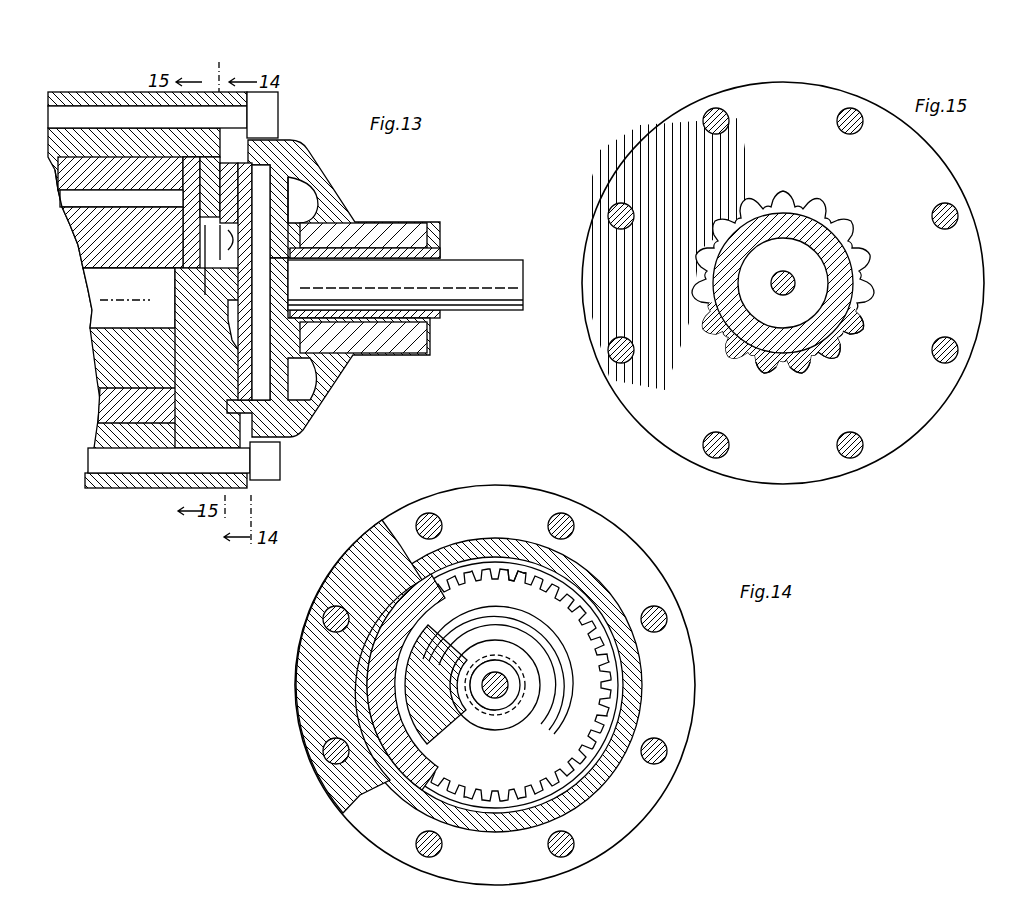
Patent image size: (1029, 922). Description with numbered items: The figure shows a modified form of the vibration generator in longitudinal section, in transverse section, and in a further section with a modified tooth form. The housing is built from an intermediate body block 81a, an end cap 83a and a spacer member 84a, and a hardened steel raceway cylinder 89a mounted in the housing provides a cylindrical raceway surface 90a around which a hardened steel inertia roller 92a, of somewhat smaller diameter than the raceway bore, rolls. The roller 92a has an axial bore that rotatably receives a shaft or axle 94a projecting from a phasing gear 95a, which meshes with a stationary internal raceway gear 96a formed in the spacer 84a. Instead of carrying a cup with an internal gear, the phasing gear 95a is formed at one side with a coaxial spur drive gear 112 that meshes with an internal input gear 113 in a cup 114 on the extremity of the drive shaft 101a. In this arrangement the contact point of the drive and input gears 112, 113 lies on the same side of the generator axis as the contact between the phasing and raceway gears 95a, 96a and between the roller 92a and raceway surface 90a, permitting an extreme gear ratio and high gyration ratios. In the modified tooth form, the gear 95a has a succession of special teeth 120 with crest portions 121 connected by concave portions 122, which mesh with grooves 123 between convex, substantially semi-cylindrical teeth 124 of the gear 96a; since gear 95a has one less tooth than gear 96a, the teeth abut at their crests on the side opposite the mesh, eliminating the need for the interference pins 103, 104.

In FIG. 13, the intermediate body member or block 81a is at (105, 489).
In FIG. 13, the end cap 83a is at (320, 398).
In FIG. 14, the end cap 83a is at (445, 497).
In FIG. 13, the spacer member 84a is at (190, 489).
In FIG. 13, the raceway cylinder 89a is at (112, 407).
In FIG. 15, the raceway cylinder 89a is at (648, 170).
In FIG. 14, the raceway cylinder 89a is at (375, 663).
In FIG. 13, the raceway surface 90a is at (70, 196).
In FIG. 13, the inertia roller 92a is at (100, 238).
In FIG. 14, the inertia roller 92a is at (405, 700).
In FIG. 13, the shaft or axle 94a is at (88, 303).
In FIG. 13, the phasing gear 95a is at (195, 195).
In FIG. 15, the phasing gear 95a is at (850, 232).
In FIG. 13, the raceway gear 96a is at (200, 186).
In FIG. 15, the raceway gear 96a is at (853, 200).
In FIG. 13, the drive shaft 101a is at (470, 262).
In FIG. 13, the interference pin 103 is at (219, 358).
In FIG. 14, the interference pin 103 is at (505, 705).
In FIG. 13, the interference pin 104 is at (248, 296).
In FIG. 14, the interference pin 104 is at (504, 683).
In FIG. 13, the spur drive gear 112 is at (250, 198).
In FIG. 14, the spur drive gear 112 is at (513, 590).
In FIG. 13, the internal input gear 113 is at (257, 162).
In FIG. 14, the internal input gear 113 is at (498, 578).
In FIG. 13, the cup 114 is at (288, 167).
In FIG. 14, the cup 114 is at (480, 572).
In FIG. 15, the special teeth 120 is at (866, 263).
In FIG. 15, the crest portions 121 is at (860, 332).
In FIG. 15, the concave portions 122 is at (838, 348).
In FIG. 15, the grooves 123 is at (877, 296).
In FIG. 15, the teeth 124 is at (860, 310).